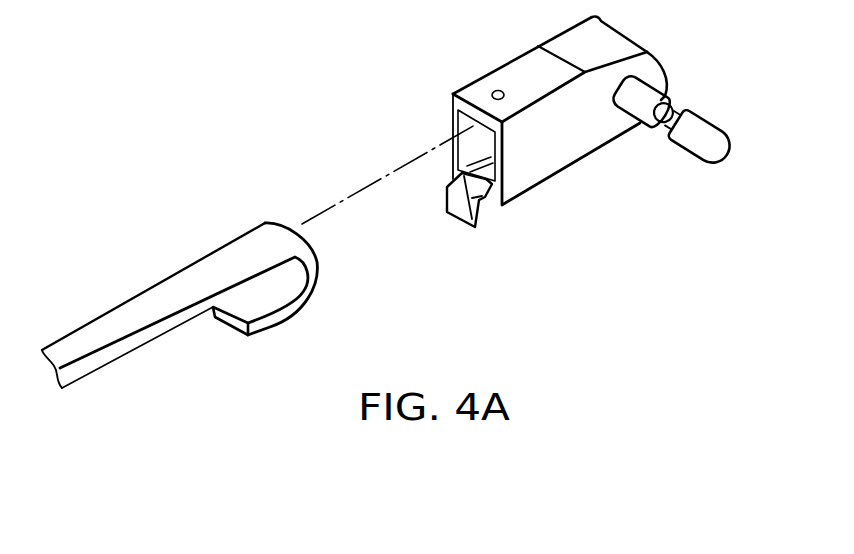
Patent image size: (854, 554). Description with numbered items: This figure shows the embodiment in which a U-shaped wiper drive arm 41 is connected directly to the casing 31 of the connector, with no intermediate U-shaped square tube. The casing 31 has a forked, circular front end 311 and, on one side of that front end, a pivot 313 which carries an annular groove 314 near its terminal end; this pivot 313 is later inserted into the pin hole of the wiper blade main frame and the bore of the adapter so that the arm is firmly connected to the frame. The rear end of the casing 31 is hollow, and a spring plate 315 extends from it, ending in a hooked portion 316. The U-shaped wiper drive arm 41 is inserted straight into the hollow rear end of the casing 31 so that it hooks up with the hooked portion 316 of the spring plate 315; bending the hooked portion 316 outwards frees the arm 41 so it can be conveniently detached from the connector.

The casing 31 is at (520, 68).
The rounded end portion 311 is at (648, 66).
The pivot 313 is at (637, 110).
The annular groove 314 is at (667, 122).
The spring plate 315 is at (489, 175).
The hooked portion 316 is at (460, 210).
The U-shaped wiper drive arm 41 is at (254, 240).